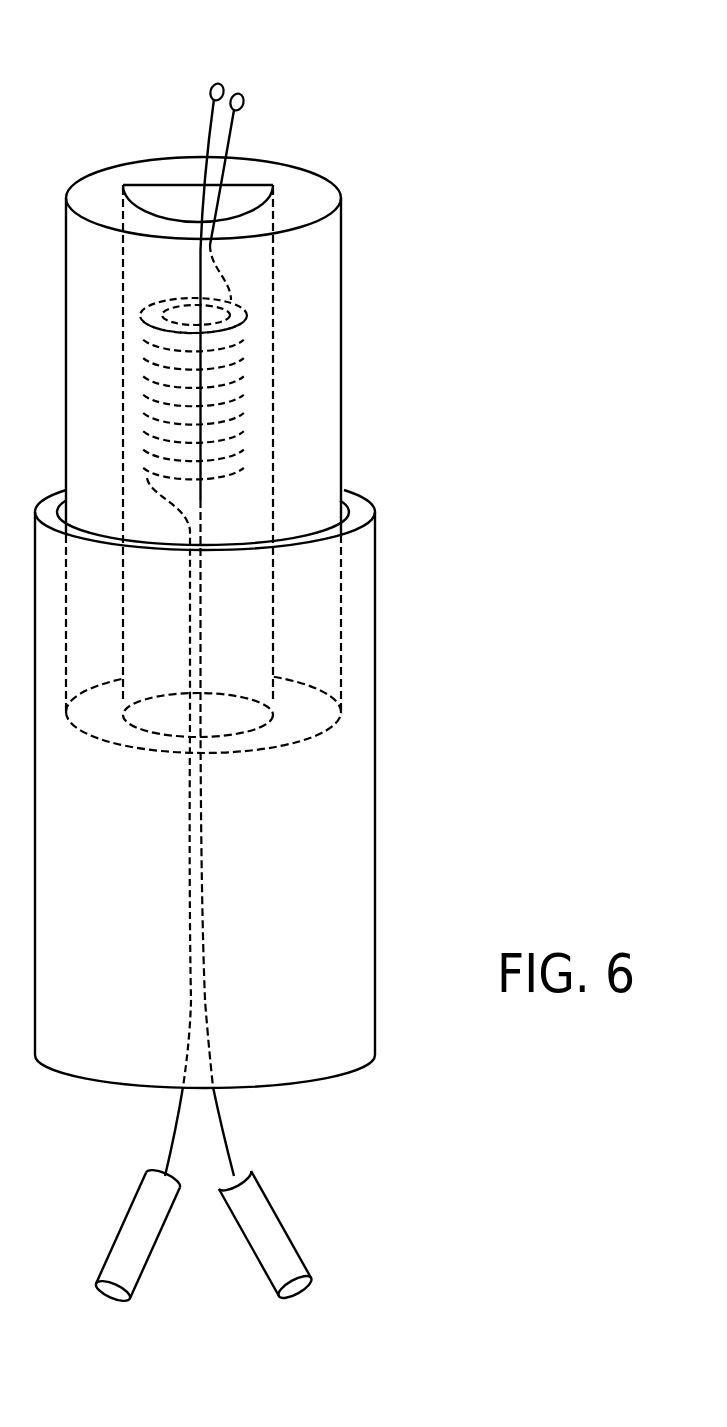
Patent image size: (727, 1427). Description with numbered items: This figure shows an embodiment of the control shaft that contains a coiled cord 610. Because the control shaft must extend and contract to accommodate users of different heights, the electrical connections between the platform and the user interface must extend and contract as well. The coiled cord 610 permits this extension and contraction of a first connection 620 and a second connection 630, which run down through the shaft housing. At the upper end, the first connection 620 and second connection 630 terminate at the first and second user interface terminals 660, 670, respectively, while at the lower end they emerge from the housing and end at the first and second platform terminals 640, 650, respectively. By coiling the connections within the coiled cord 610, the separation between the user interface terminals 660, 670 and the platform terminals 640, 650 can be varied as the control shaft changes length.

The coiled cord 610 is at (342, 109).
The first connection 620 is at (231, 125).
The second connection 630 is at (212, 123).
The first platform terminal 640 is at (260, 1210).
The second platform terminal 650 is at (133, 1213).
The first user interface terminal 660 is at (243, 96).
The second user interface terminal 670 is at (219, 83).